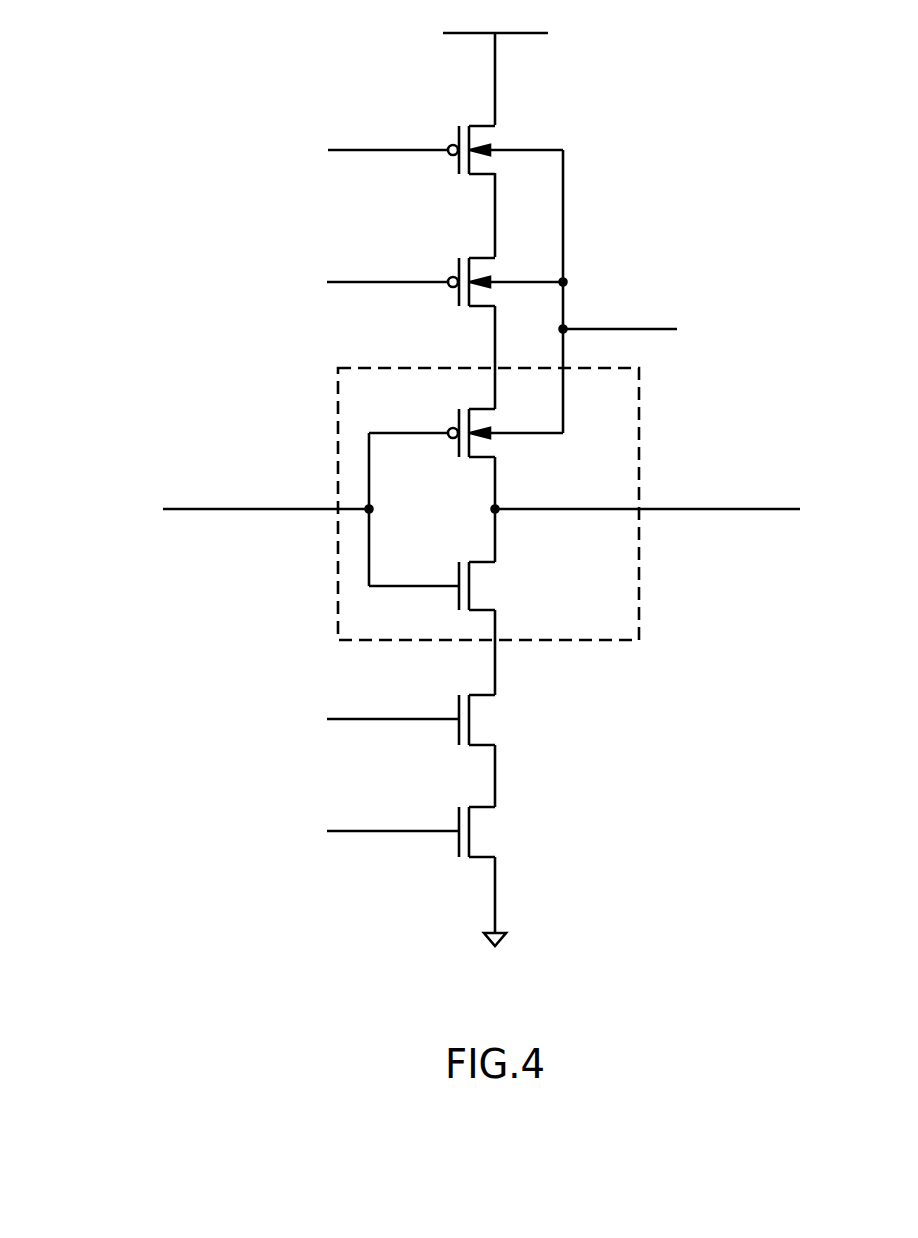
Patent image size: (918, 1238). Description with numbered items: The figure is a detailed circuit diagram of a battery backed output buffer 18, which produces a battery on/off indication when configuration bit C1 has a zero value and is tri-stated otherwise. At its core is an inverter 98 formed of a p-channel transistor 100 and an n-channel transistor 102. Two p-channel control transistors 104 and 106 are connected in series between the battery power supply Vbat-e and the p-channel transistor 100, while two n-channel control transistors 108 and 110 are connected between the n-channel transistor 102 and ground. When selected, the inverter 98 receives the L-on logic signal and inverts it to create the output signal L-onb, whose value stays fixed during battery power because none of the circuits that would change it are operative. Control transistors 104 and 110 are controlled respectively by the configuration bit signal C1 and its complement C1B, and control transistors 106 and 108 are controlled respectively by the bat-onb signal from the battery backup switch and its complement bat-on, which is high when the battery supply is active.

The battery backed output buffer 18 is at (444, 475).
The inverter 98 is at (639, 571).
The p-channel transistor 100 is at (490, 445).
The n-channel transistor 102 is at (478, 590).
The p-channel control transistor 104 is at (488, 137).
The p-channel control transistor 106 is at (479, 266).
The n-channel control transistor 108 is at (478, 717).
The n-channel control transistor 110 is at (478, 832).